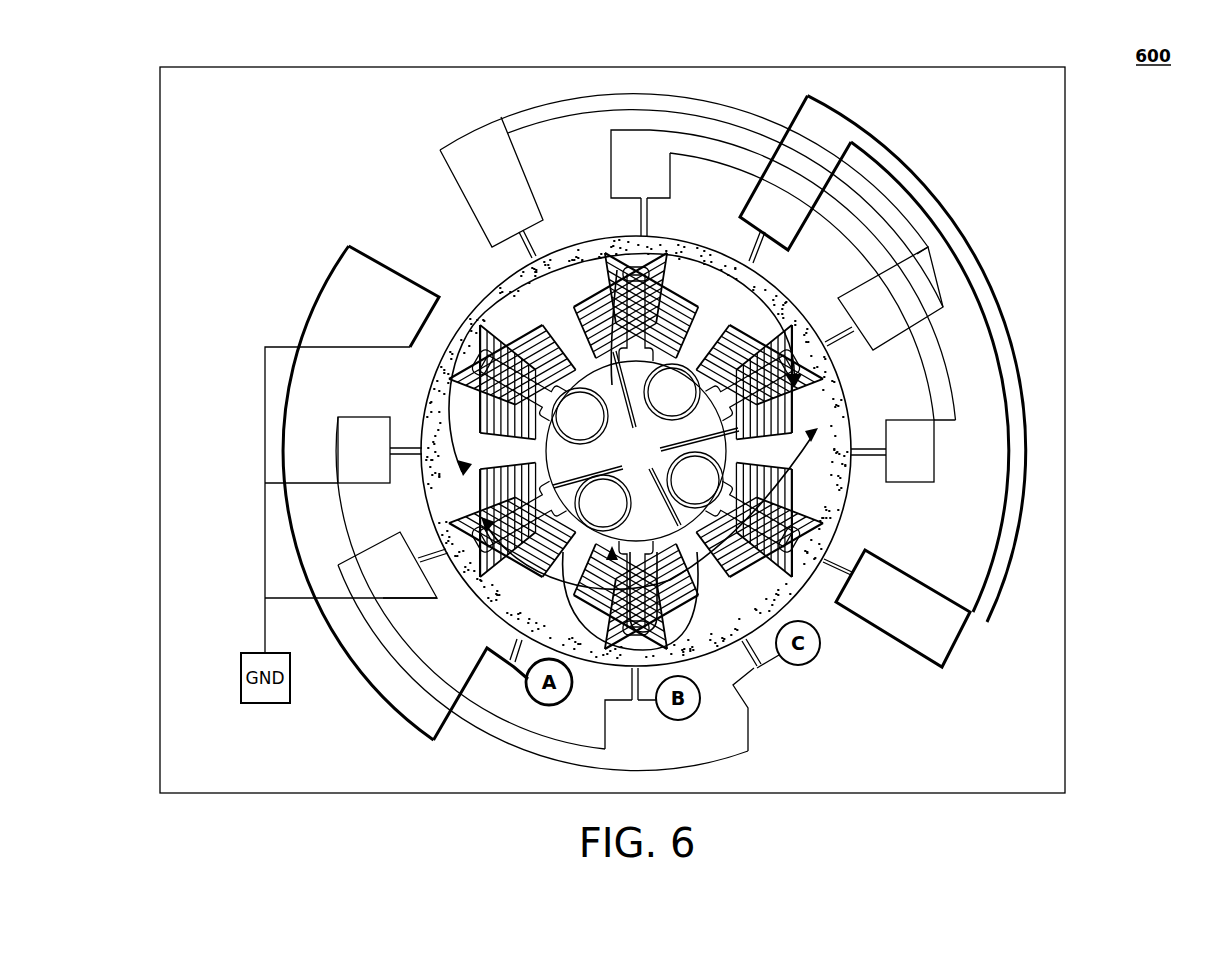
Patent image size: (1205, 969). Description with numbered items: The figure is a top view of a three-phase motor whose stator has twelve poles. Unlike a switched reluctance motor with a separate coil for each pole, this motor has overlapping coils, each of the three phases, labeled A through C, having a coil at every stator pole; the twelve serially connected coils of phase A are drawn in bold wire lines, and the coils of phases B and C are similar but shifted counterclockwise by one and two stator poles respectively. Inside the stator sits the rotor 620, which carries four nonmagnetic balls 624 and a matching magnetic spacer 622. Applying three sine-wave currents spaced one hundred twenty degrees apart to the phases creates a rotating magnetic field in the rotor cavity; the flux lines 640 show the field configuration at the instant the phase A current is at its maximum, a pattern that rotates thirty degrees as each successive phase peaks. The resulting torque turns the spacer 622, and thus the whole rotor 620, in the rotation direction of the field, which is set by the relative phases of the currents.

The rotor 620 is at (597, 597).
The magnetic spacer 622 is at (622, 452).
The nonmagnetic balls 624 is at (708, 488).
The flux lines 640 is at (612, 278).